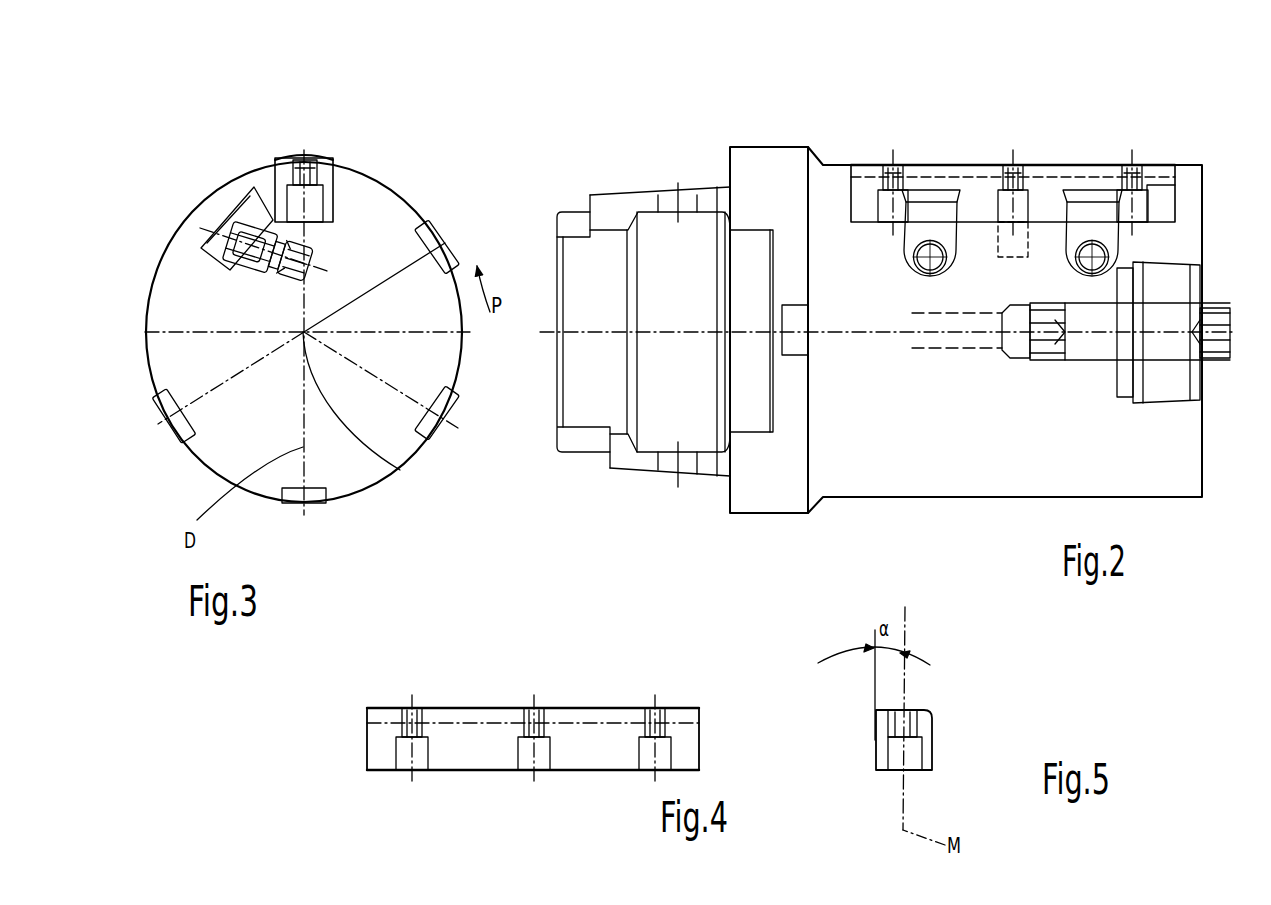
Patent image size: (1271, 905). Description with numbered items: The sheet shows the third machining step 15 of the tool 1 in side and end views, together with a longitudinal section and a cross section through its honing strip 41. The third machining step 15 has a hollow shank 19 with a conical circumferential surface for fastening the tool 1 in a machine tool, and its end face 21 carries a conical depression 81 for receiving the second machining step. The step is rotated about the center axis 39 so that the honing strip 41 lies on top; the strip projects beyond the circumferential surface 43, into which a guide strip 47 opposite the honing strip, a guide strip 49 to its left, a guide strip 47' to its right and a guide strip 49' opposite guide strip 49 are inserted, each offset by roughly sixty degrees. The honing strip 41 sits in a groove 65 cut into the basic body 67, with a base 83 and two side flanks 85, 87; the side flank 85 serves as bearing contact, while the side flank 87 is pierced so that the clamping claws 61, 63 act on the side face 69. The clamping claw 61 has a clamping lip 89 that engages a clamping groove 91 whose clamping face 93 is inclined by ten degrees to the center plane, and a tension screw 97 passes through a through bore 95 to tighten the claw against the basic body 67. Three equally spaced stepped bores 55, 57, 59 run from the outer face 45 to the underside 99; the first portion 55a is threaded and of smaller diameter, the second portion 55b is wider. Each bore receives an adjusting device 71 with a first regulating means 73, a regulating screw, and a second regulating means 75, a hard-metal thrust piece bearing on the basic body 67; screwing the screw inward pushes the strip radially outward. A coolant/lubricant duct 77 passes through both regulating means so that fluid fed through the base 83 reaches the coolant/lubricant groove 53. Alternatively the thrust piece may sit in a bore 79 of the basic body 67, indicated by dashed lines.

In FIG. 3, the tool 1 is at (120, 112).
In FIG. 3, the third machining step 15 is at (244, 148).
In FIG. 2, the third machining step 15 is at (851, 125).
In FIG. 2, the hollow shank 19 is at (617, 200).
In FIG. 2, the end face 21 is at (1204, 492).
In FIG. 3, the center axis 39 is at (405, 478).
In FIG. 2, the center axis 39 is at (585, 330).
In FIG. 3, the honing strip 41 is at (328, 178).
In FIG. 2, the honing strip 41 is at (1168, 190).
In FIG. 4, the honing strip 41 is at (362, 745).
In FIG. 5, the honing strip 41 is at (950, 704).
In FIG. 3, the circumferential surface 43 is at (460, 370).
In FIG. 2, the circumferential surface 43 is at (920, 497).
In FIG. 3, the outer face 45 is at (298, 158).
In FIG. 2, the outer face 45 is at (1042, 163).
In FIG. 4, the outer face 45 is at (573, 708).
In FIG. 3, the guide strip 47 is at (304, 540).
In FIG. 3, the guide strip 47' is at (454, 443).
In FIG. 3, the guide strip 49 is at (146, 426).
In FIG. 3, the guide strip 49' is at (466, 247).
In FIG. 4, the coolant/lubricant groove 53 is at (688, 717).
In FIG. 3, the bore 55 is at (310, 200).
In FIG. 2, the bore 55 is at (900, 165).
In FIG. 4, the bore 55 is at (401, 700).
In FIG. 5, the bore 55 is at (916, 710).
In FIG. 4, the first portion 55a is at (423, 716).
In FIG. 5, the first portion 55a is at (920, 728).
In FIG. 4, the second portion 55b is at (430, 755).
In FIG. 5, the second portion 55b is at (930, 762).
In FIG. 2, the bore 57 is at (997, 182).
In FIG. 4, the bore 57 is at (530, 700).
In FIG. 2, the bore 59 is at (1118, 175).
In FIG. 4, the bore 59 is at (655, 700).
In FIG. 3, the clamping claw 61 is at (198, 258).
In FIG. 2, the clamping claw 61 is at (893, 215).
In FIG. 3, the clamping claw 63 is at (325, 229).
In FIG. 2, the clamping claw 63 is at (1080, 237).
In FIG. 2, the groove 65 is at (1177, 205).
In FIG. 3, the basic body 67 is at (340, 474).
In FIG. 2, the basic body 67 is at (857, 477).
In FIG. 3, the side face 69 is at (293, 158).
In FIG. 2, the side face 69 is at (860, 190).
In FIG. 5, the side face 69 is at (872, 760).
In FIG. 2, the adjusting device 71 is at (862, 195).
In FIG. 2, the first regulating means 73 is at (876, 170).
In FIG. 2, the second regulating means 75 is at (883, 215).
In FIG. 2, the coolant/lubricant duct 77 is at (895, 223).
In FIG. 2, the bore 79 is at (997, 253).
In FIG. 2, the conical depression 81 is at (1180, 285).
In FIG. 3, the base 83 is at (380, 280).
In FIG. 3, the side flank 85 is at (325, 182).
In FIG. 3, the side flank 87 is at (255, 182).
In FIG. 3, the clamping lip 89 is at (262, 200).
In FIG. 3, the clamping groove 91 is at (290, 166).
In FIG. 5, the clamping groove 91 is at (868, 731).
In FIG. 3, the clamping face 93 is at (320, 162).
In FIG. 5, the clamping face 93 is at (903, 607).
In FIG. 3, the through bore 95 is at (208, 232).
In FIG. 3, the tension screw 97 is at (232, 263).
In FIG. 4, the underside 99 is at (583, 775).